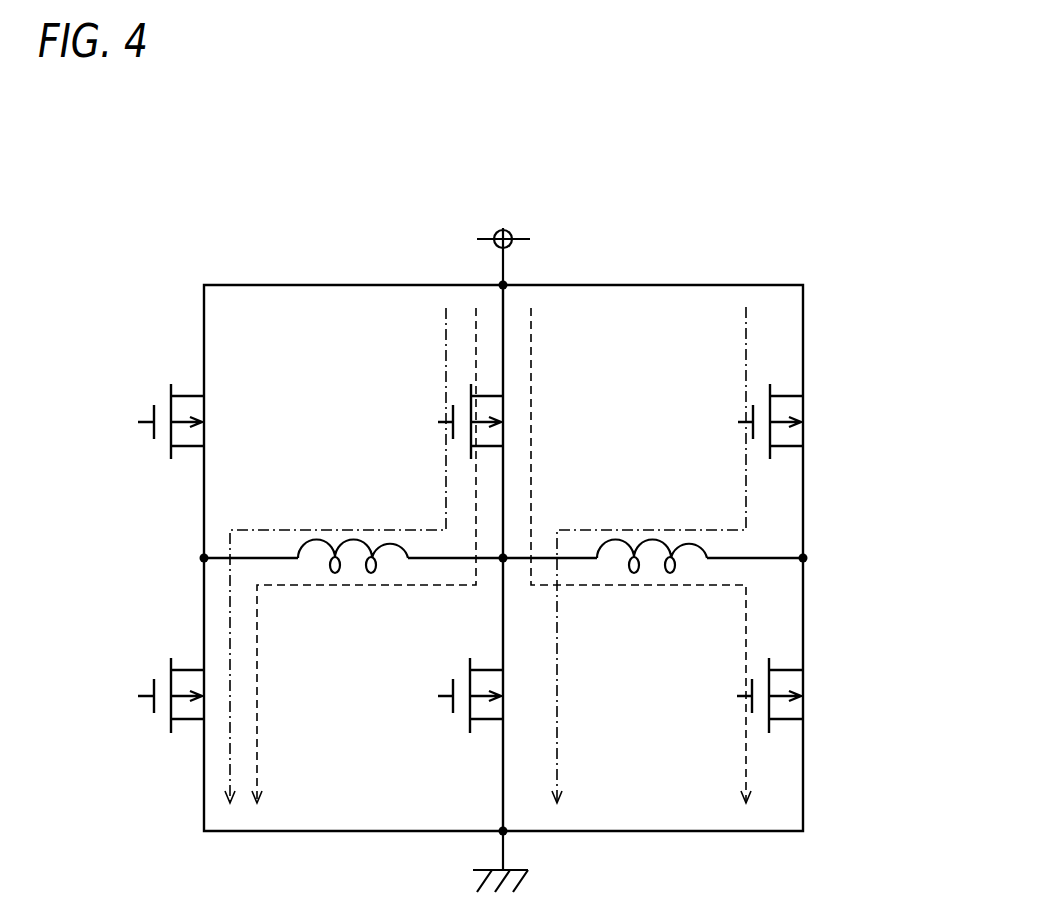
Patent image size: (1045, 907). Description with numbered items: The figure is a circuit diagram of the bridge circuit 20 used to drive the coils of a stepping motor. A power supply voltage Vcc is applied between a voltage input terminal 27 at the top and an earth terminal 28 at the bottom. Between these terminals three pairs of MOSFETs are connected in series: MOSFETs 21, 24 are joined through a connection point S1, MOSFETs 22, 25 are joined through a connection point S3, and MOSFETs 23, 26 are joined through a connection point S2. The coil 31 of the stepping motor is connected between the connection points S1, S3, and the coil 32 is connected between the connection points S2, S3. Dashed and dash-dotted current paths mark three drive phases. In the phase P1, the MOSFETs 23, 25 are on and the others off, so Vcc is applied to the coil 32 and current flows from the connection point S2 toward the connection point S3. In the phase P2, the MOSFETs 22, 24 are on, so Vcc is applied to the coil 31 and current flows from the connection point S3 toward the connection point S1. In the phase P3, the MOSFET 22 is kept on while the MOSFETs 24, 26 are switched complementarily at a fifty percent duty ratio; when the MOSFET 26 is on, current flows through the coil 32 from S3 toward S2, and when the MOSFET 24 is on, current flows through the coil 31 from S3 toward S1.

The bridge circuit 20 is at (748, 182).
The MOSFET 21 is at (162, 390).
The MOSFET 22 is at (461, 396).
The MOSFET 23 is at (762, 388).
The MOSFET 24 is at (162, 665).
The MOSFET 25 is at (460, 670).
The MOSFET 26 is at (760, 660).
The voltage input terminal 27 is at (497, 232).
The earth terminal 28 is at (500, 845).
The coil 31 is at (299, 544).
The coil 32 is at (600, 544).
The connection point S1 is at (204, 560).
The connection point S2 is at (804, 557).
The connection point S3 is at (504, 560).
The phase P1 is at (677, 528).
The phase P2 is at (379, 528).
The phase P3 is at (476, 327).